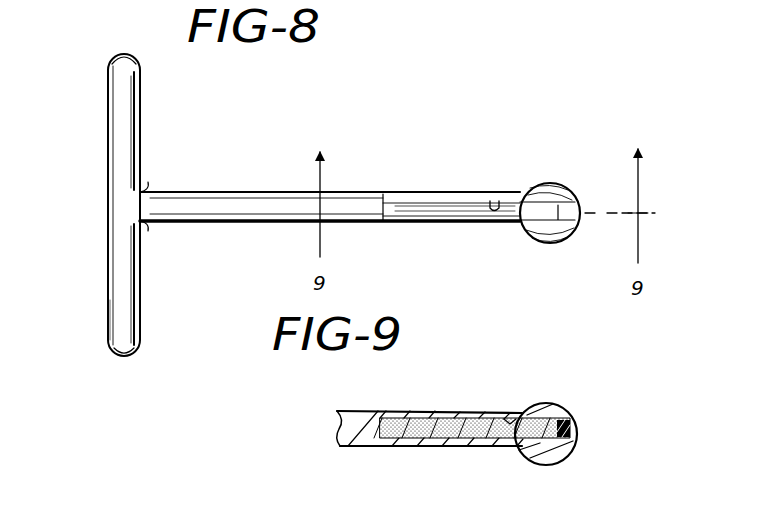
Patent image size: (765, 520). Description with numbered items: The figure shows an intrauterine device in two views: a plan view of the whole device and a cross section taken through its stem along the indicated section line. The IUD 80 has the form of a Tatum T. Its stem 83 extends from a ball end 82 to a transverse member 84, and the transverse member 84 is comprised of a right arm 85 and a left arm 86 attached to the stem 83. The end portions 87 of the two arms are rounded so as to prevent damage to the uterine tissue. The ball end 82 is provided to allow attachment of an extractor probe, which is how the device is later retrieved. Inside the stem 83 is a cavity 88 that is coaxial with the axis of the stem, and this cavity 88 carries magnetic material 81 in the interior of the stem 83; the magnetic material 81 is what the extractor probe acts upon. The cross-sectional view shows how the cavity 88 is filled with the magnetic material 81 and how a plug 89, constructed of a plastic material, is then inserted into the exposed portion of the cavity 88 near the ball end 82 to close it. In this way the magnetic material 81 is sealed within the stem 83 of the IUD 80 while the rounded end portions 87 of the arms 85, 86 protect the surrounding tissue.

In FIG. 8, the IUD 80 is at (223, 188).
In FIG. 8, the magnetic material 81 is at (430, 192).
In FIG. 9, the magnetic material 81 is at (400, 447).
In FIG. 8, the ball end 82 is at (548, 244).
In FIG. 9, the ball end 82 is at (552, 464).
In FIG. 9, the stem 83 is at (352, 410).
In FIG. 8, the transverse member 84 is at (108, 192).
In FIG. 8, the right arm 85 is at (110, 74).
In FIG. 8, the left arm 86 is at (108, 315).
In FIG. 8, the end portions 87 is at (128, 356).
In FIG. 8, the cavity 88 is at (505, 193).
In FIG. 9, the cavity 88 is at (510, 416).
In FIG. 9, the plug 89 is at (575, 430).